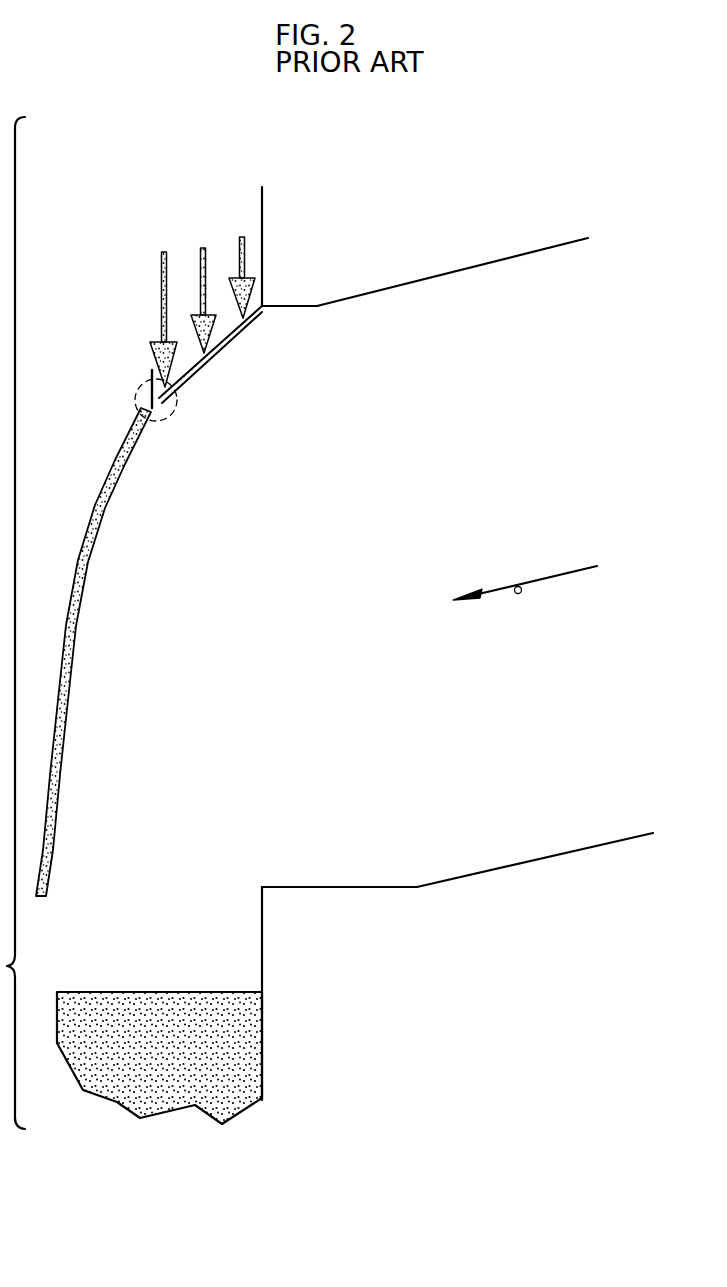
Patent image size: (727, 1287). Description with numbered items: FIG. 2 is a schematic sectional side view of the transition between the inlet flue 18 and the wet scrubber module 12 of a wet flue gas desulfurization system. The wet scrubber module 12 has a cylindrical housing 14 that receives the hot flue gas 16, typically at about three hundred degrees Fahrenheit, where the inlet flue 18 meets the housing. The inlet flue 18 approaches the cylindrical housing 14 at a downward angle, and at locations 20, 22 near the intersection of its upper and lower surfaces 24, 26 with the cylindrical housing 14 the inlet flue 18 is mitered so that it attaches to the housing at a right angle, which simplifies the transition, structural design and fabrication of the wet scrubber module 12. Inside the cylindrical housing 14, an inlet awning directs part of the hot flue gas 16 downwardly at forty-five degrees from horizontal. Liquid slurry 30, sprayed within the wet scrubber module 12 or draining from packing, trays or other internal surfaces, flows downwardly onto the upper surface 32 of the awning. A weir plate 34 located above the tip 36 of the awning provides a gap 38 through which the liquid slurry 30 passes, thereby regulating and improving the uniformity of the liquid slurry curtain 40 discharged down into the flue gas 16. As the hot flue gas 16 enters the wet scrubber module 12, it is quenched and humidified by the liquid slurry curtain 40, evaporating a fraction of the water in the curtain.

The wet scrubber module 12 is at (100, 867).
The cylindrical housing 14 is at (263, 200).
The flue gas 16 is at (530, 583).
The inlet flue 18 is at (402, 798).
The location 20 is at (286, 285).
The location 22 is at (291, 910).
The upper surface 24 is at (453, 273).
The lower surface 26 is at (527, 862).
The liquid slurry 30 is at (238, 237).
The upper surface 32 is at (234, 338).
The weir plate 34 is at (147, 380).
The tip 36 is at (163, 410).
The gap 38 is at (128, 424).
The liquid slurry curtain 40 is at (66, 642).